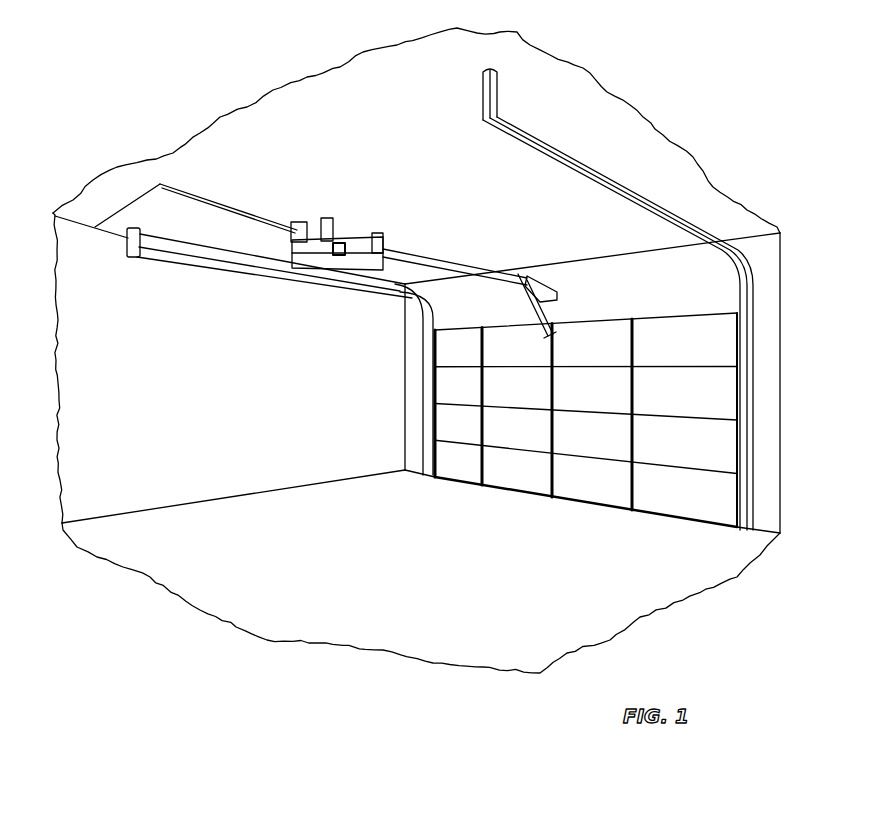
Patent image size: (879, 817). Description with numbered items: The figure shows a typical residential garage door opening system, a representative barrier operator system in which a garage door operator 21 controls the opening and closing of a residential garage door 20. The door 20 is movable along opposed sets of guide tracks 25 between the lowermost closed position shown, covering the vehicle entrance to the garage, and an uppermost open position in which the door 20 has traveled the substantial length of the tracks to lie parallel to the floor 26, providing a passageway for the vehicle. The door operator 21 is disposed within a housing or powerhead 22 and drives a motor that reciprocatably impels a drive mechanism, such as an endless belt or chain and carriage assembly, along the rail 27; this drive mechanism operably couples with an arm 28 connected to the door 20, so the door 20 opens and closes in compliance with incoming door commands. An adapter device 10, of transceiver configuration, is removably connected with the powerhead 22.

The adapter device 10 is at (341, 243).
The garage door 20 is at (594, 503).
The garage door operator 21 is at (410, 216).
The powerhead 22 is at (366, 258).
The guide tracks 25 is at (203, 263).
The floor 26 is at (441, 584).
The rail 27 is at (440, 264).
The arm 28 is at (550, 320).